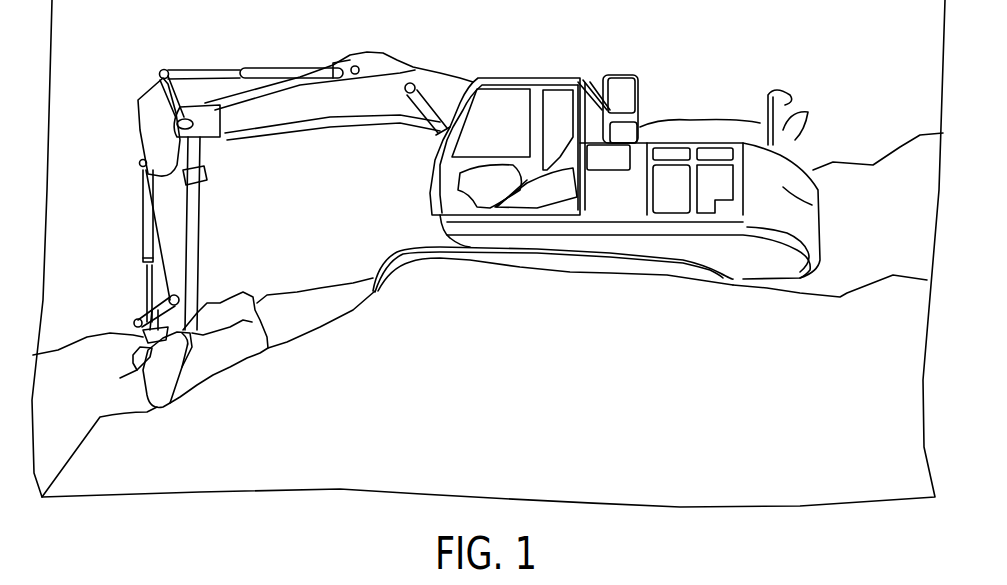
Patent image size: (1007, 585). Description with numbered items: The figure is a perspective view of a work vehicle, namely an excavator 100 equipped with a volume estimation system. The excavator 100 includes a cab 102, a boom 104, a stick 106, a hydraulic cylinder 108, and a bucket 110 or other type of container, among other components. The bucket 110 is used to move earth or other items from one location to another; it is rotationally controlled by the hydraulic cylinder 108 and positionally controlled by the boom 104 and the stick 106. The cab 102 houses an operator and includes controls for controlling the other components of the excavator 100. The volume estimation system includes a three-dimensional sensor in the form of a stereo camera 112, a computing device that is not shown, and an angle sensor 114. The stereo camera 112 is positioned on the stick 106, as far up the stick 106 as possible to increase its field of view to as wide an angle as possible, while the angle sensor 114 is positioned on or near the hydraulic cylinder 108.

The excavator 100 is at (740, 72).
The cab 102 is at (547, 78).
The boom 104 is at (423, 63).
The stick 106 is at (155, 103).
The hydraulic cylinder 108 is at (143, 215).
The bucket 110 is at (153, 395).
The stereo camera 112 is at (207, 175).
The angle sensor 114 is at (140, 161).